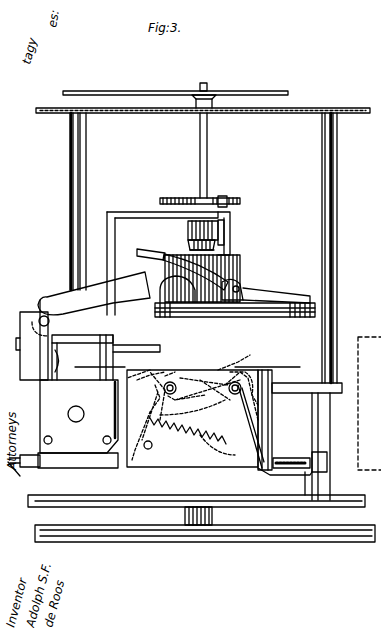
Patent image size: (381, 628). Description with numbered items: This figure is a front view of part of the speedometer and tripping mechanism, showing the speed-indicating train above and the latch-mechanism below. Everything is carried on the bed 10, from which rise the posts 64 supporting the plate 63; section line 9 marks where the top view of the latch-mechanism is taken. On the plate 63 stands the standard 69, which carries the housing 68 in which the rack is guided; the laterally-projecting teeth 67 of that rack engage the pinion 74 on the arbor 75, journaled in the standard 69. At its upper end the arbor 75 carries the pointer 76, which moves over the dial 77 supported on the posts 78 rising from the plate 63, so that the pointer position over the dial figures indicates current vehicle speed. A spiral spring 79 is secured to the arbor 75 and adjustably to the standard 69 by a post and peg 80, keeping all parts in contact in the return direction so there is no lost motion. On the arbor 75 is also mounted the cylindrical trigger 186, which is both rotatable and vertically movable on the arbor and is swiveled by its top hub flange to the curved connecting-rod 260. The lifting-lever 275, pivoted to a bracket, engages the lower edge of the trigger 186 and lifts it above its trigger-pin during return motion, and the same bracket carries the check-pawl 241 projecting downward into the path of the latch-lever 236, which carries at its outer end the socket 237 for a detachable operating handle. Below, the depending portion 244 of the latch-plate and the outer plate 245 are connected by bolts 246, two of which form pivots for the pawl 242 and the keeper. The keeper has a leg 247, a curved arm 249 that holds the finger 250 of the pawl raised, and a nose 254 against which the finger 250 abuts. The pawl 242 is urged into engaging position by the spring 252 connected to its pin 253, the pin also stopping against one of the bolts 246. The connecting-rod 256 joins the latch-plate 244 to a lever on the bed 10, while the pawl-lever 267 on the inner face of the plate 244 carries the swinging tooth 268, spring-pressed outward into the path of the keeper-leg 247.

The pointer 76 is at (153, 91).
The dial 77 is at (291, 108).
The posts 78 is at (68, 160).
The arbor 75 is at (207, 153).
The spiral spring 79 is at (176, 198).
The post and peg 80 is at (227, 199).
The housing 68 is at (231, 212).
The standard 69 is at (115, 212).
The pinion 74 is at (188, 233).
The laterally-projecting teeth 67 is at (225, 229).
The curved connecting-rod 260 is at (226, 246).
The cylindrical trigger 186 is at (242, 270).
The check-pawl 241 is at (272, 298).
The lifting-lever 275 is at (53, 297).
The bed 10 is at (20, 320).
The latch-lever 236 is at (125, 336).
The section line 9— 9 is at (190, 369).
The pawl 242 is at (126, 383).
The pin 253 is at (150, 422).
The outer plate 245 is at (198, 458).
The bolts 246 is at (170, 382).
The finger 250 is at (226, 368).
The nose 254 is at (241, 378).
The curved arm 249 is at (188, 422).
The spring 252 is at (225, 449).
The depending portion of latch-plate 244 is at (272, 398).
The leg 247 is at (268, 445).
The swinging tooth 268 is at (282, 458).
The plate 63 is at (336, 394).
The posts 64 is at (326, 432).
The socket 237 is at (85, 455).
The connecting-rod 256 is at (25, 471).
The pawl-lever 267 is at (305, 478).